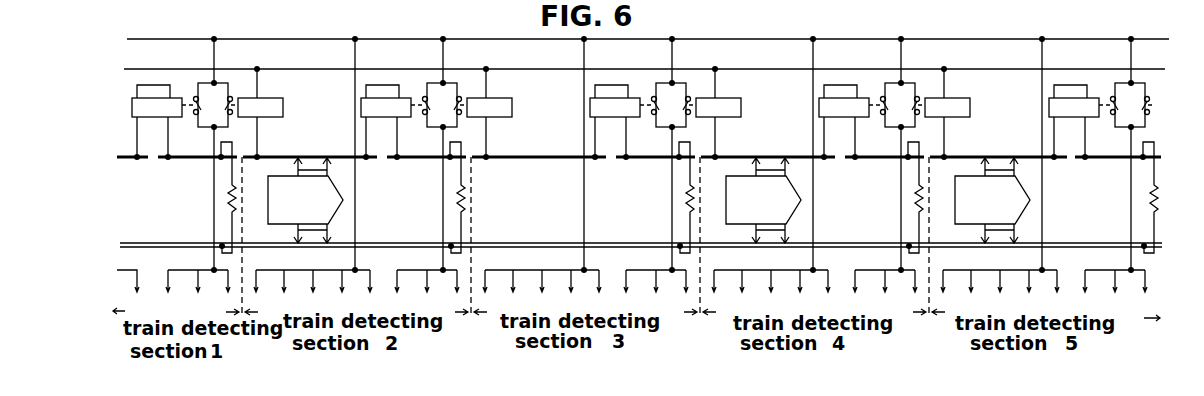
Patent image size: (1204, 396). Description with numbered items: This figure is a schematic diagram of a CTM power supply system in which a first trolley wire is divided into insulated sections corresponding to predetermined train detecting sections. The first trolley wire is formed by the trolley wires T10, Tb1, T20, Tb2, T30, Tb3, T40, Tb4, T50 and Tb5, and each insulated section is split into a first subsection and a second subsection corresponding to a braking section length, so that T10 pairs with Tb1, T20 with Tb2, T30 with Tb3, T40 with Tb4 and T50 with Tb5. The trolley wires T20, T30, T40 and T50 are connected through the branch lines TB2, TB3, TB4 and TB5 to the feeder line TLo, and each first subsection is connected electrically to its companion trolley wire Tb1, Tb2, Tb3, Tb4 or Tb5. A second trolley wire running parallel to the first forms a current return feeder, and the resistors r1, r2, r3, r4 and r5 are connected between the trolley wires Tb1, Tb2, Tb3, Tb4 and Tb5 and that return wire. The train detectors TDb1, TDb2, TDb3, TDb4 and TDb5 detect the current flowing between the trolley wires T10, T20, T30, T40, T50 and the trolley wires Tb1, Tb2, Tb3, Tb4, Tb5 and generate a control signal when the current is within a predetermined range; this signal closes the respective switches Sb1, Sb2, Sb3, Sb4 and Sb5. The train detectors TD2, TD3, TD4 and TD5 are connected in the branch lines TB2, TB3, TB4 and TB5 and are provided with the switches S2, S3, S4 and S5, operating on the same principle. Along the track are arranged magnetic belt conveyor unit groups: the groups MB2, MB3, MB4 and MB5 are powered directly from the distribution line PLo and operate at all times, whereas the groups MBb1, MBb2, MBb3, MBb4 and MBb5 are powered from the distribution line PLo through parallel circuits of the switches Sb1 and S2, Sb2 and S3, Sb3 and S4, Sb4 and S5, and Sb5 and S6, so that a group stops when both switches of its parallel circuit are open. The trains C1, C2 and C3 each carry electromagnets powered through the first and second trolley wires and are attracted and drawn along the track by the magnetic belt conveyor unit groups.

The distribution line PLo is at (648, 28).
The feeder line TLo is at (644, 57).
The trolley wire T10 is at (126, 146).
The switch Sb1 is at (193, 97).
The train detector TDb1 is at (157, 122).
The trolley wire Tb1 is at (197, 148).
The resistor r1 is at (224, 197).
The magnetic belt conveyor unit group MBb1 is at (197, 288).
The switch Sb2 is at (422, 97).
The train detector TDb2 is at (386, 122).
The trolley wire Tb2 is at (426, 148).
The resistor r2 is at (453, 197).
The magnetic belt conveyor unit group MBb2 is at (428, 291).
The switch Sb3 is at (651, 97).
The train detector TDb3 is at (615, 122).
The trolley wire Tb3 is at (655, 148).
The resistor r3 is at (682, 197).
The magnetic belt conveyor unit group MBb3 is at (657, 292).
The switch Sb4 is at (880, 97).
The train detector TDb4 is at (844, 122).
The trolley wire Tb4 is at (884, 148).
The resistor r4 is at (911, 197).
The magnetic belt conveyor unit group MBb4 is at (885, 293).
The switch Sb5 is at (1110, 97).
The train detector TDb5 is at (1074, 122).
The trolley wire Tb5 is at (1118, 148).
The resistor r5 is at (1146, 197).
The magnetic belt conveyor unit group MBb5 is at (1115, 293).
The switch S2 is at (233, 97).
The train detector TD2 is at (260, 113).
The switch S3 is at (462, 97).
The train detector TD3 is at (489, 113).
The switch S4 is at (691, 97).
The train detector TD4 is at (718, 113).
The switch S5 is at (920, 97).
The train detector TD5 is at (947, 113).
The switch S6 is at (1150, 97).
The trolley wire T20 is at (310, 148).
The trolley wire T30 is at (539, 148).
The trolley wire T40 is at (768, 148).
The trolley wire T50 is at (998, 148).
The branch line TB2 is at (259, 220).
The branch line TB3 is at (488, 220).
The branch line TB4 is at (717, 220).
The branch line TB5 is at (946, 220).
The magnetic belt conveyor unit group MB2 is at (313, 287).
The magnetic belt conveyor unit group MB3 is at (542, 291).
The magnetic belt conveyor unit group MB4 is at (771, 293).
The magnetic belt conveyor unit group MB5 is at (1000, 292).
The train C1 is at (992, 200).
The train C2 is at (763, 200).
The train C3 is at (305, 200).